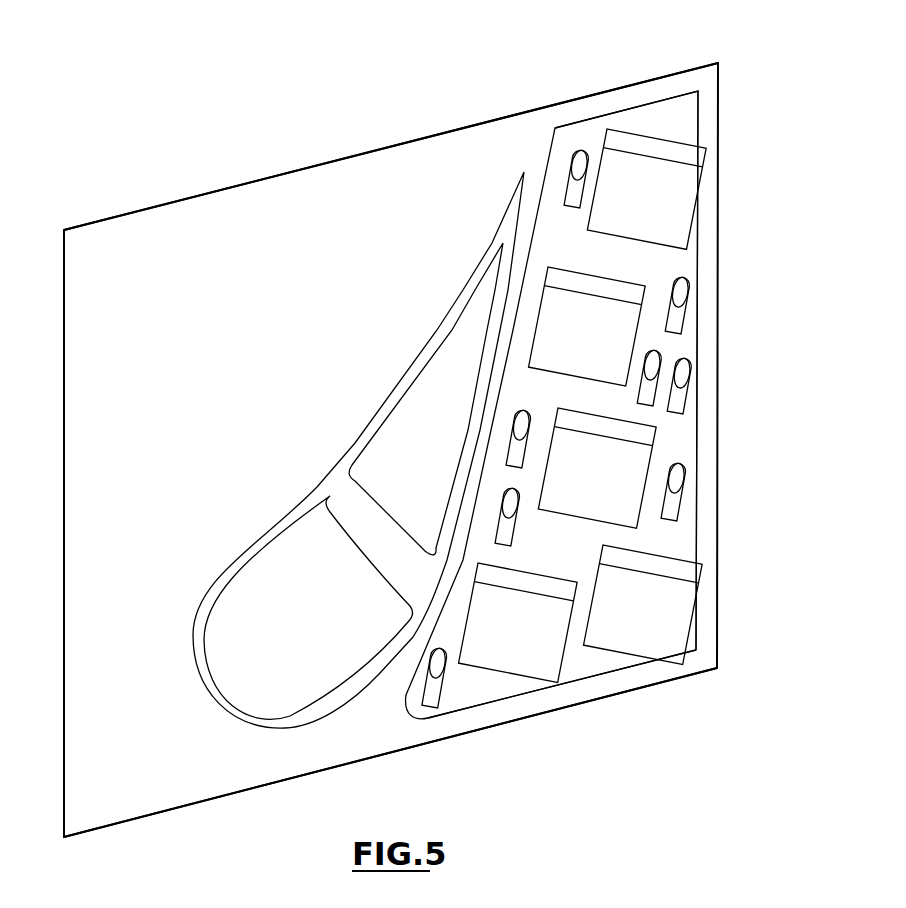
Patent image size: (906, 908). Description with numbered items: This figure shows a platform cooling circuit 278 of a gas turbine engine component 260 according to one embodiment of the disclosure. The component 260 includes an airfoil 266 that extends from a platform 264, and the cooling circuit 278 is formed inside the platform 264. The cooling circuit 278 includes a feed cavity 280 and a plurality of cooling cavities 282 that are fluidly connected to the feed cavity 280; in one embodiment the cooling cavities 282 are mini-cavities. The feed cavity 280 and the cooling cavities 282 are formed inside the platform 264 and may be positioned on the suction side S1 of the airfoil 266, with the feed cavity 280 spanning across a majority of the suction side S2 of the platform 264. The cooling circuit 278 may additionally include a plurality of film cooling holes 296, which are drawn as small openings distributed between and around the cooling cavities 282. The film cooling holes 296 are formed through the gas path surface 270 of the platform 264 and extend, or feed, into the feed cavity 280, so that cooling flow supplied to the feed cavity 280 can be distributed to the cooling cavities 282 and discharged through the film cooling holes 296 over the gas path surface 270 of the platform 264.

The component 260 is at (426, 440).
The platform 264 is at (507, 118).
The airfoil 266 is at (367, 438).
The gas path surface 270 is at (203, 771).
The cooling circuit 278 is at (617, 105).
The feed cavity 280 is at (687, 120).
The cooling cavities 282 is at (583, 405).
The film cooling holes 296 is at (572, 205).
The suction side of the airfoil S1 is at (384, 708).
The suction side of the platform S2 is at (573, 710).